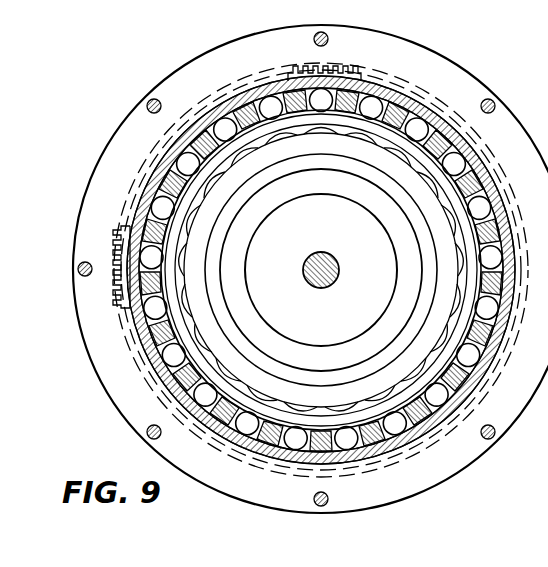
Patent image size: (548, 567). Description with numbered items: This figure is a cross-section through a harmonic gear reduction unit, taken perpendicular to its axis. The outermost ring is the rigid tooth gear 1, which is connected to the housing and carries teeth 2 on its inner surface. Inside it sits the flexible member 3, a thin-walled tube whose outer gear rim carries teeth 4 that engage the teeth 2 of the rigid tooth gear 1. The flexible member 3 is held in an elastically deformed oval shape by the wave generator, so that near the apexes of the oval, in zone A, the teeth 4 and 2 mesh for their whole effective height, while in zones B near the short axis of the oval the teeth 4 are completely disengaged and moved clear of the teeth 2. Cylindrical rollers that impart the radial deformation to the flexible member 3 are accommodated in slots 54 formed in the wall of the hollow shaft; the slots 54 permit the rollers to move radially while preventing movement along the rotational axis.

The rigid tooth gear 1 is at (93, 358).
The teeth 2 is at (117, 291).
The flexible member 3 is at (143, 205).
The teeth 4 is at (118, 238).
The slots 54 is at (150, 183).
The zone of engagement A is at (331, 72).
The zone of disengagement B is at (112, 275).